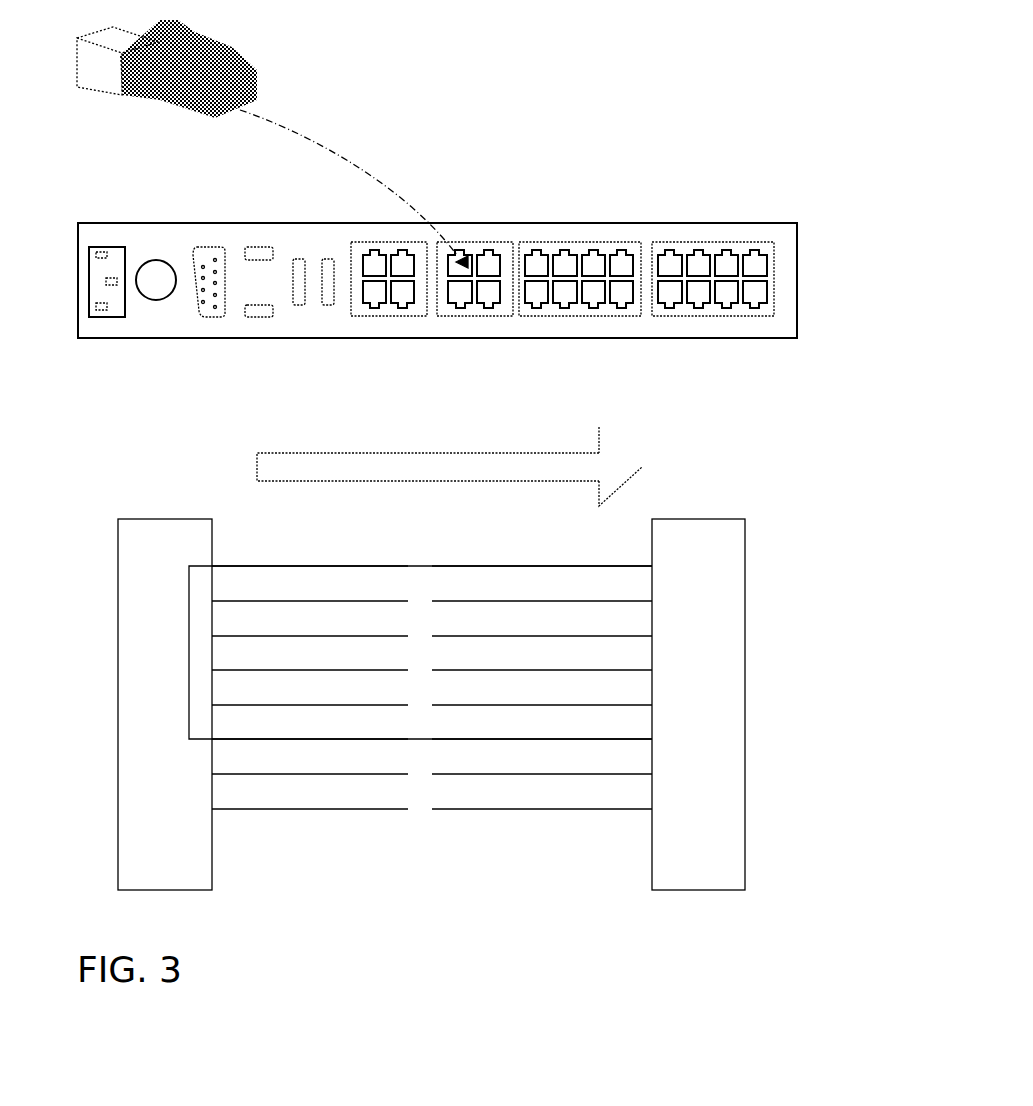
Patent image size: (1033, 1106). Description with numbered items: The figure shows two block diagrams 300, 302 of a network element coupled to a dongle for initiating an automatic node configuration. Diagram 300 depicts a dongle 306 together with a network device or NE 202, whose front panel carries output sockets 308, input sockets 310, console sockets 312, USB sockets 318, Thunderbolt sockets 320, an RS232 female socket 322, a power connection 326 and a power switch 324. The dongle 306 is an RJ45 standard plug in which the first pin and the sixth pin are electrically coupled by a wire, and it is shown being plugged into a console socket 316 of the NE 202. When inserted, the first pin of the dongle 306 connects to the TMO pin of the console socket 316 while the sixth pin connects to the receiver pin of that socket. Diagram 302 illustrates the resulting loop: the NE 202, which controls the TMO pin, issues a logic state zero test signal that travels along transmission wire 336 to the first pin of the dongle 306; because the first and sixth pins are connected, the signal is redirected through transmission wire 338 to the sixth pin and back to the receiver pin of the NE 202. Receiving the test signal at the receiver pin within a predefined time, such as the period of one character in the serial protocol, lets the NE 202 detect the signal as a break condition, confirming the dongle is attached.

The diagram 300 is at (636, 134).
The diagram 302 is at (774, 532).
The dongle 306 is at (232, 53).
The output sockets 308 is at (705, 317).
The input sockets 310 is at (570, 317).
The console sockets 312 is at (467, 317).
The console socket 316 is at (467, 247).
The USB sockets 318 is at (299, 305).
The Thunderbolt sockets 320 is at (262, 317).
The RS232 female socket 322 is at (196, 258).
The power switch 324 is at (156, 280).
The power connection 326 is at (101, 247).
The network element 202 is at (607, 223).
The transmission wire 336 is at (520, 564).
The transmission wire 338 is at (532, 738).